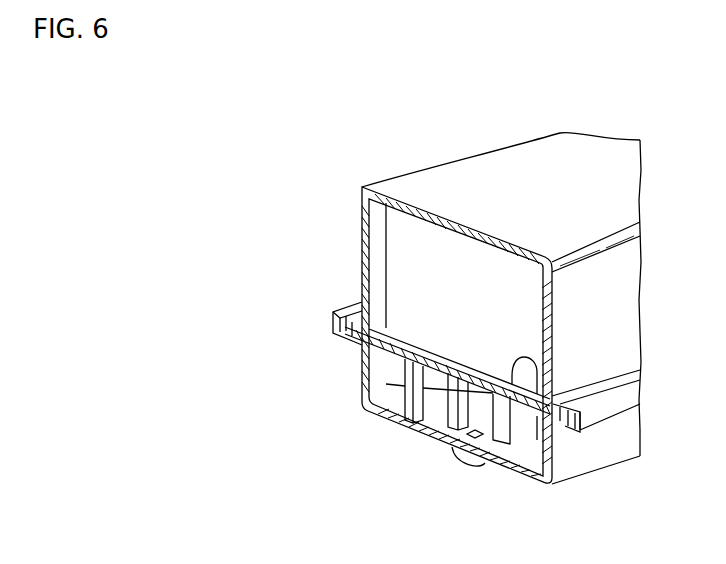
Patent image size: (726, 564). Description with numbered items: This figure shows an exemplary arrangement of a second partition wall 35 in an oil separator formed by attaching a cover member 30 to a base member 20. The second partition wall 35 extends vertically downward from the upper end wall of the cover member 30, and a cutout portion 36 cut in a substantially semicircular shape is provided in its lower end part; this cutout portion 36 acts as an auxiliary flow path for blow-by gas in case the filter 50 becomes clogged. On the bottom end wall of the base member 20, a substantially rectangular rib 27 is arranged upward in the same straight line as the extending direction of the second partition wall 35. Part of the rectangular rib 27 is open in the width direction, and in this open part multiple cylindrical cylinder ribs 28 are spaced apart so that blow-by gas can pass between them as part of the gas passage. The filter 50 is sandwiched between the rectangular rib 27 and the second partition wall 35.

The base member 20 is at (604, 478).
The cover member 30 is at (421, 131).
The second partition wall 35 is at (418, 255).
The filter 50 is at (391, 361).
The cylinder rib 28 is at (395, 401).
The rectangular rib 27 is at (505, 425).
The cutout portion 36 is at (521, 362).